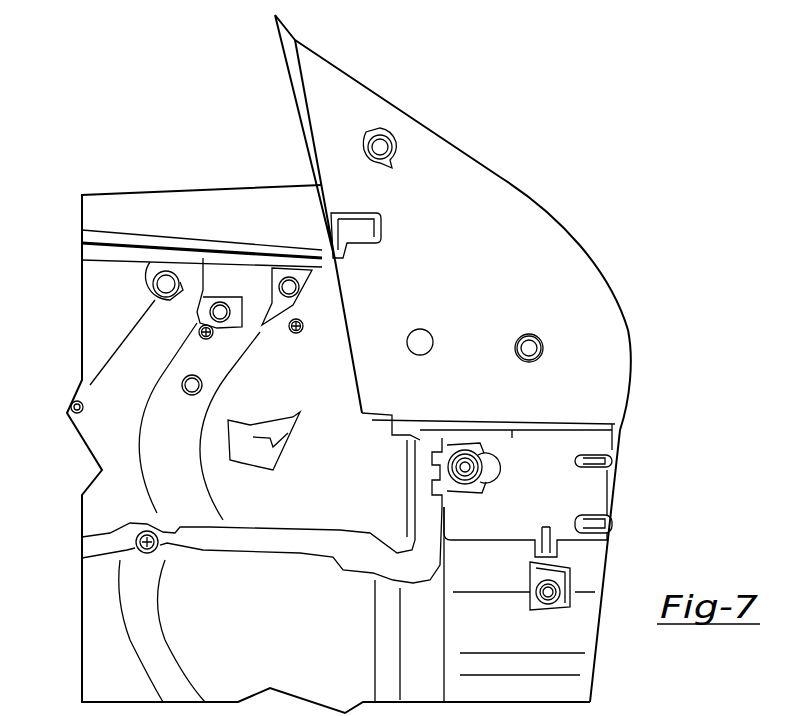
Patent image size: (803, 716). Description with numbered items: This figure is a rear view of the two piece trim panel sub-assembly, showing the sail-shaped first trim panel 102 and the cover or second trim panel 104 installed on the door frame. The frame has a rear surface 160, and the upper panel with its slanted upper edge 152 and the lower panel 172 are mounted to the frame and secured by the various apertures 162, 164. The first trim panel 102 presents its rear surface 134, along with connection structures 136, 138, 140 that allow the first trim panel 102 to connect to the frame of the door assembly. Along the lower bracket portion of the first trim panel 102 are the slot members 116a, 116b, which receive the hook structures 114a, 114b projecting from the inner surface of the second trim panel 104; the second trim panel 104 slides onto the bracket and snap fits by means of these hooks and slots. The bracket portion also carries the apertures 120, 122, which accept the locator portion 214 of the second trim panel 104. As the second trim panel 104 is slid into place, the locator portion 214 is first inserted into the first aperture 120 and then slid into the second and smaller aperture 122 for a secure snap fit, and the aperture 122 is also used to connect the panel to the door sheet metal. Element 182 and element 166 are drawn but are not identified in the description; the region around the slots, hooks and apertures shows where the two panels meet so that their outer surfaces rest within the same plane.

The first trim panel 102 is at (505, 209).
The second trim panel 104 is at (618, 497).
The hook structure 114a is at (607, 453).
The hook structure 114b is at (612, 522).
The slot member 116a is at (592, 460).
The slot member 116b is at (602, 530).
The first aperture 120 is at (505, 472).
The second aperture 122 is at (462, 492).
The rear surface 134 is at (466, 254).
The connection structure 136 is at (386, 146).
The connection structure 138 is at (530, 336).
The connection structure 140 is at (430, 350).
The upper edge 152 is at (236, 224).
The rear surface 160 is at (283, 409).
The aperture 162 is at (198, 336).
The aperture 164 is at (298, 334).
The lower mounting boss 166 is at (549, 602).
The lower panel 172 is at (135, 600).
The receiver housing 182 is at (559, 474).
The locator portion 214 is at (458, 455).